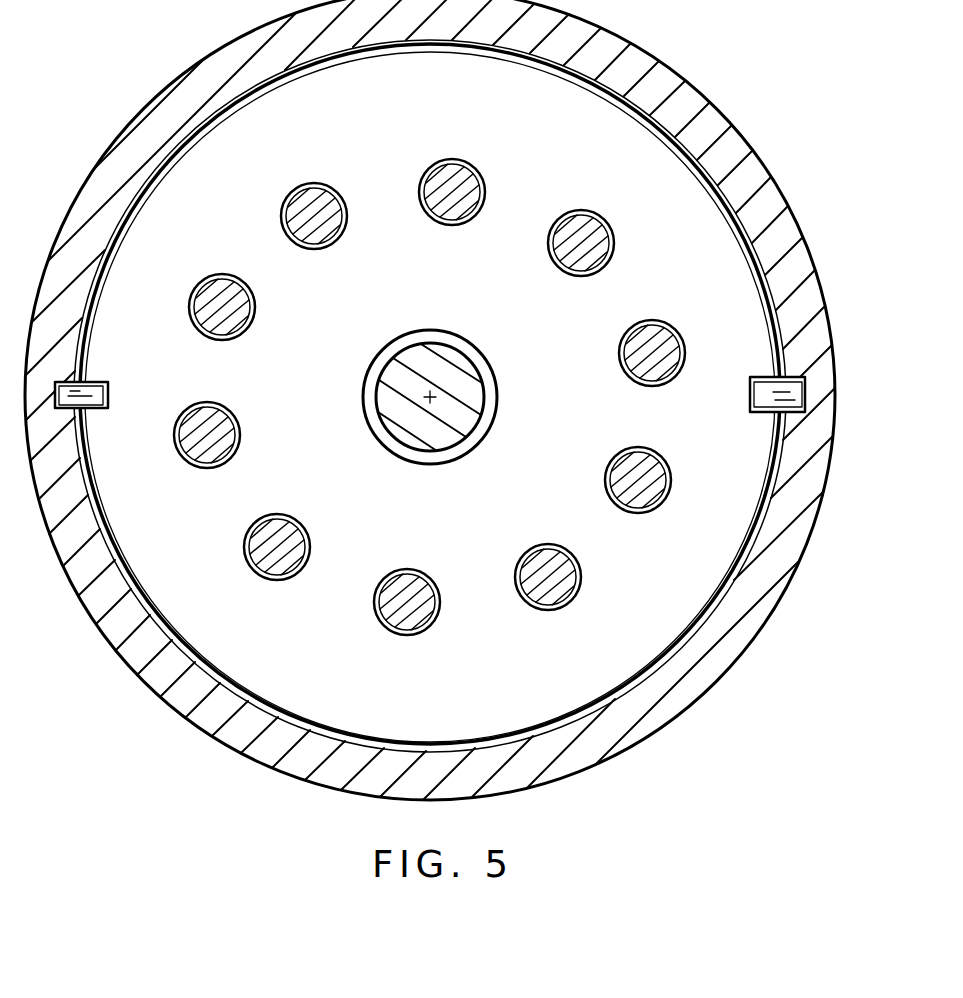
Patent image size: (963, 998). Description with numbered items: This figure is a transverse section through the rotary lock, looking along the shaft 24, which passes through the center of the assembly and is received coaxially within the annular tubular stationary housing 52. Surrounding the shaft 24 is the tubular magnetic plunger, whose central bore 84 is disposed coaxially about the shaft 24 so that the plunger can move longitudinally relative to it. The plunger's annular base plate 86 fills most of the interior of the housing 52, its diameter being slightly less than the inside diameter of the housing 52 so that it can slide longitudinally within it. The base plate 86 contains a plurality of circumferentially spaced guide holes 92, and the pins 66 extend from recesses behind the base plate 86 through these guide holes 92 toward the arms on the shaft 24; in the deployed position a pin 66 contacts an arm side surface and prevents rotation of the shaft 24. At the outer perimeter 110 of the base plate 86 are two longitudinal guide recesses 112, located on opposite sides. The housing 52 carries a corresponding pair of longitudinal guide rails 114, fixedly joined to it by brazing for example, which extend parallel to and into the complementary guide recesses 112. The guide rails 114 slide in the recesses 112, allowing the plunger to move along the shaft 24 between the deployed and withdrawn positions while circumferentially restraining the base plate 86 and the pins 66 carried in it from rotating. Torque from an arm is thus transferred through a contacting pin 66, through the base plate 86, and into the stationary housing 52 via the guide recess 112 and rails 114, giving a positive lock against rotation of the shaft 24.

The shaft 24 is at (465, 367).
The stationary housing 52 is at (827, 326).
The pins 66 is at (420, 198).
The central bore 84 is at (492, 429).
The base plate 86 is at (716, 497).
The guide holes 92 is at (554, 234).
The outer perimeter 110 is at (766, 296).
The guide recesses 112 is at (98, 380).
The guide rails 114 is at (108, 397).